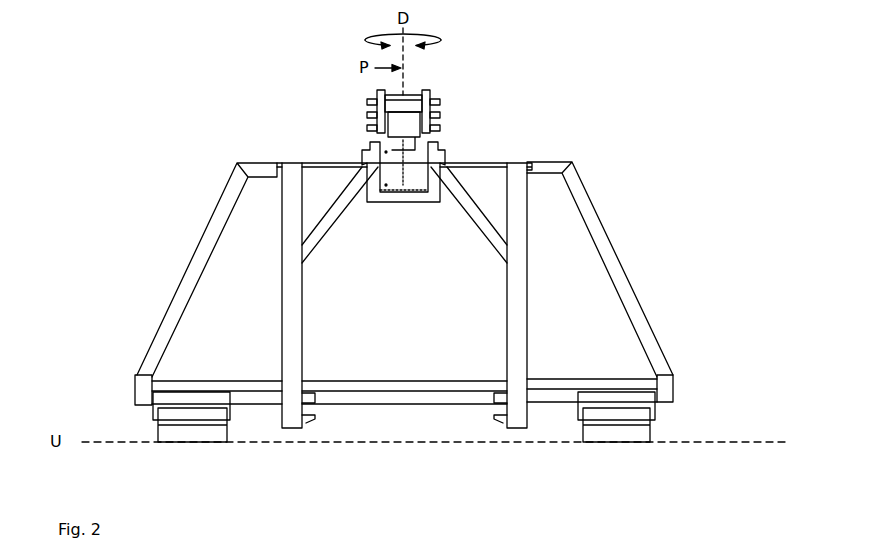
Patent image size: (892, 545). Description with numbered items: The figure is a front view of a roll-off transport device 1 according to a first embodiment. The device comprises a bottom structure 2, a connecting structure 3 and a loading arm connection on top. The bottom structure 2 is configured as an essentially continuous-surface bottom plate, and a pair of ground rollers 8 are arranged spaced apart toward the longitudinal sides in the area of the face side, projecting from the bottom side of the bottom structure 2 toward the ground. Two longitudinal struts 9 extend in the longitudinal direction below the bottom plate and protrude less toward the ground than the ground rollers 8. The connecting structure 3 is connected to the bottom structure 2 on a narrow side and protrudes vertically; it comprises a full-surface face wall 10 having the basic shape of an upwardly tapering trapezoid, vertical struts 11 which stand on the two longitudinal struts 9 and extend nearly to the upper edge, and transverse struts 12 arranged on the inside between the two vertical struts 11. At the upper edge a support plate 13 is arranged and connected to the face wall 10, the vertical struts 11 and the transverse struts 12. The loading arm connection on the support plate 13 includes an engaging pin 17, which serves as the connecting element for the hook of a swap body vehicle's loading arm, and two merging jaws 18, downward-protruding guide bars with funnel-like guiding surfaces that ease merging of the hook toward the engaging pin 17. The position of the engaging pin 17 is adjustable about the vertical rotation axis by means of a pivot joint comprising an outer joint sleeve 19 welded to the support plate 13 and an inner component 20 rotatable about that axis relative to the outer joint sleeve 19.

The roll-off transport device 1 is at (607, 136).
The bottom structure 2 is at (640, 388).
The connecting structure 3 is at (588, 292).
The ground rollers 8 is at (198, 437).
The longitudinal struts 9 is at (296, 418).
The face wall 10 is at (240, 343).
The vertical struts 11 is at (512, 360).
The transverse struts 12 is at (335, 193).
The support plate 13 is at (502, 163).
The engaging pin 17 is at (395, 108).
The merging jaws 18 is at (393, 127).
The outer joint sleeve 19 is at (413, 155).
The inner component 20 is at (406, 121).